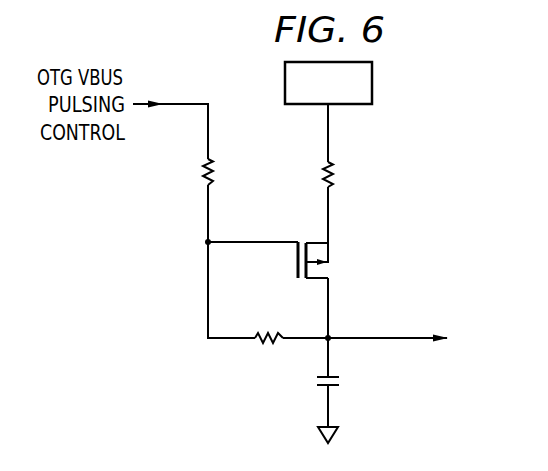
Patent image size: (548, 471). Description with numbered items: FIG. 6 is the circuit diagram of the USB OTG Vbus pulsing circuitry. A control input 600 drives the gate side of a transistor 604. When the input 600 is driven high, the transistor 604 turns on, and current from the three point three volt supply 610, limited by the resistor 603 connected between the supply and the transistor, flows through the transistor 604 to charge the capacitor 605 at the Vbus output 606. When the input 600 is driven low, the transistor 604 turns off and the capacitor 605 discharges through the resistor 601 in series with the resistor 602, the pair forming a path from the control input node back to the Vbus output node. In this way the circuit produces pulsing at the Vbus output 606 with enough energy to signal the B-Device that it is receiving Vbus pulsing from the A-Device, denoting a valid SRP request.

The input 600 is at (183, 103).
The resistor 601 is at (214, 165).
The resistor 602 is at (268, 345).
The resistor 603 is at (322, 181).
The transistor 604 is at (296, 272).
The capacitor 605 is at (318, 383).
The Vbus output 606 is at (387, 337).
The 3.3 volts supply 610 is at (372, 84).